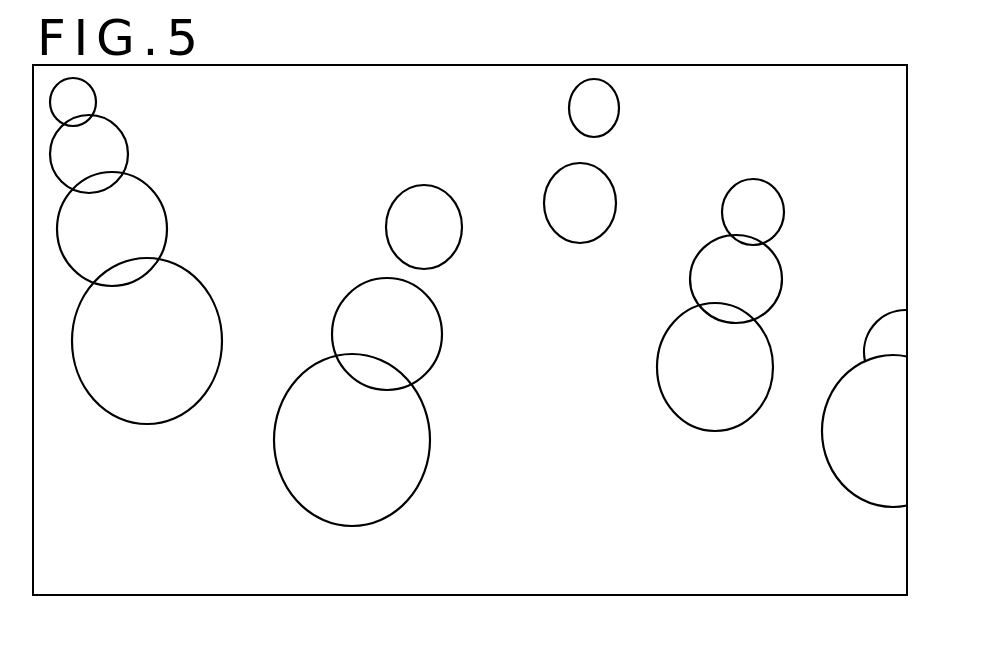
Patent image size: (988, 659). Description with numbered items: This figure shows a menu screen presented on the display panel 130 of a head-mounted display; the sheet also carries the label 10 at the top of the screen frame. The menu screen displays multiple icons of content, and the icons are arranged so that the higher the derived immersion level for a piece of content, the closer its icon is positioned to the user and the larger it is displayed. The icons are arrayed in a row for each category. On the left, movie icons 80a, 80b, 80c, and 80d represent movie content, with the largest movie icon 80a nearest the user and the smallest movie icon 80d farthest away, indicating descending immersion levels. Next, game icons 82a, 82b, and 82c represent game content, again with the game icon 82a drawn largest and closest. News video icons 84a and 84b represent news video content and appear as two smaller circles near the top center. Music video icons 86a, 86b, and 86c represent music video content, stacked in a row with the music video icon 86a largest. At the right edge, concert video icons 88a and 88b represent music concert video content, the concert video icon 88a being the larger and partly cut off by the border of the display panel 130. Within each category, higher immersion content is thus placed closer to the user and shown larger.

The display device 10 is at (489, 46).
The display panel 130 is at (470, 612).
The movie icon 80a is at (210, 343).
The movie icon 80b is at (157, 232).
The movie icon 80c is at (116, 157).
The movie icon 80d is at (85, 105).
The game icon 82a is at (418, 440).
The game icon 82b is at (430, 340).
The game icon 82c is at (450, 227).
The news video icon 84a is at (556, 204).
The news video icon 84b is at (580, 109).
The music video icon 86a is at (668, 368).
The music video icon 86b is at (702, 285).
The music video icon 86c is at (733, 215).
The concert video icon 88a is at (832, 432).
The concert video icon 88b is at (885, 330).